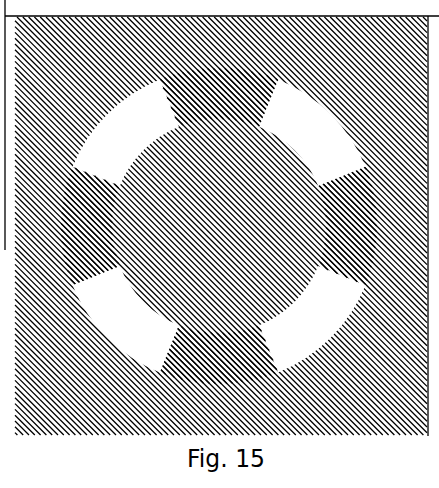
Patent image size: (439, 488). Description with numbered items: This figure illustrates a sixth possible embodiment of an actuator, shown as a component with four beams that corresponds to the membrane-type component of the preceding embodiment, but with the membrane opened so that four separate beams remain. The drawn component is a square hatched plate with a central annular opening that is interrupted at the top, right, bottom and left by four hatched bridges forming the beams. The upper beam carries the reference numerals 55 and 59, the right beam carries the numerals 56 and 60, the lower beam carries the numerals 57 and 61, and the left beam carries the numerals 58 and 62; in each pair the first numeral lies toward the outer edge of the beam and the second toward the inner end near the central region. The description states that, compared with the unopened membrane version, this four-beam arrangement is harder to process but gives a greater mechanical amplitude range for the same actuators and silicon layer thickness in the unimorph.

The upper connecting portion 55 is at (218, 82).
The right connecting portion 56 is at (362, 225).
The lower connecting portion 57 is at (219, 370).
The left connecting portion 58 is at (67, 226).
The upper inner bridge region 59 is at (219, 111).
The right inner bridge region 60 is at (328, 226).
The lower inner bridge region 61 is at (219, 342).
The left inner bridge region 62 is at (107, 225).